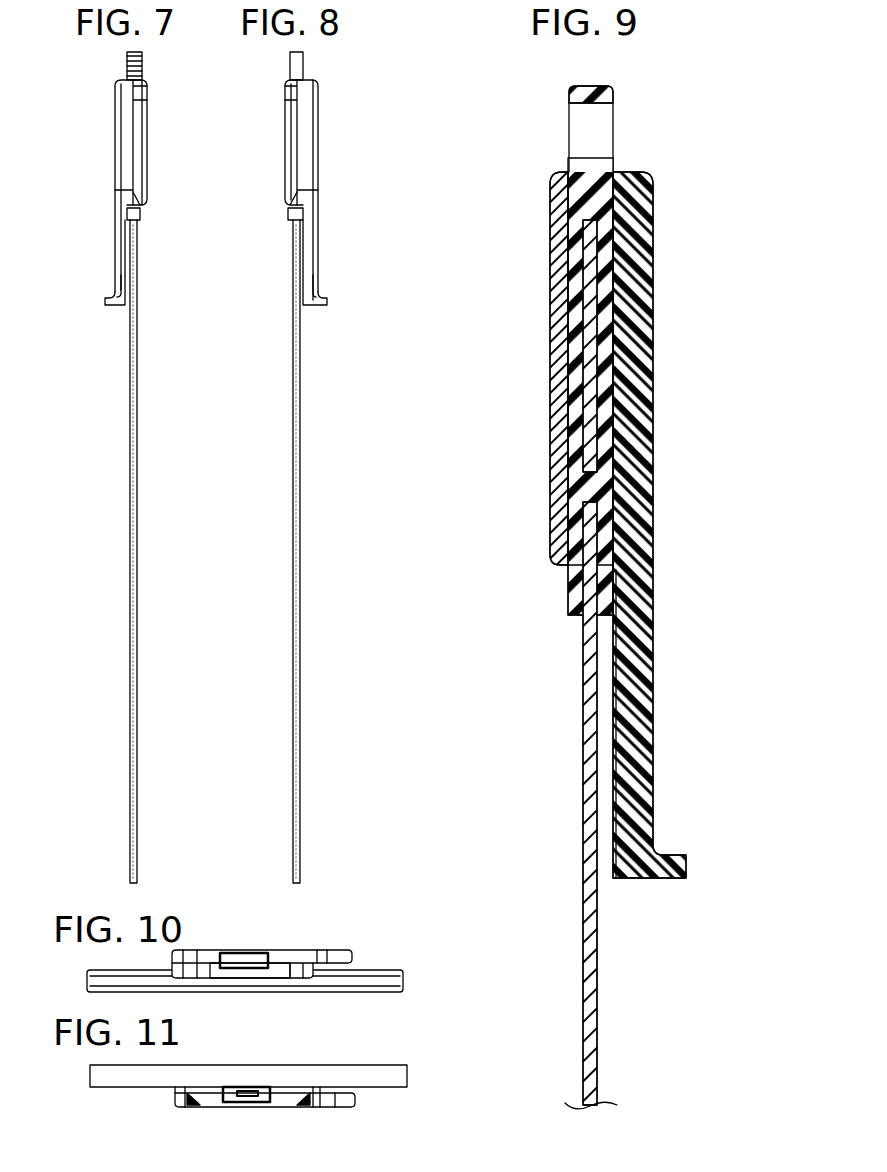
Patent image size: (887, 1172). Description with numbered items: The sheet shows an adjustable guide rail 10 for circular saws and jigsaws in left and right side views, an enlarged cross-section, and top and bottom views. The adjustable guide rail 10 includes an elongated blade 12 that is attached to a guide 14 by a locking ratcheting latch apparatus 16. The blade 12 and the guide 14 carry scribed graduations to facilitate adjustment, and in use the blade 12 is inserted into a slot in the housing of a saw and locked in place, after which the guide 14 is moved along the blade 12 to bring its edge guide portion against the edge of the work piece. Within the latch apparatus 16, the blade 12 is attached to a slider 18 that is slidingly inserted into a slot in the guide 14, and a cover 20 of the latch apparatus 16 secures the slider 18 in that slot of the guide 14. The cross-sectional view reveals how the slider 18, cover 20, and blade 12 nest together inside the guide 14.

In FIG. 7, the adjustable guide rail 10 is at (116, 481).
In FIG. 8, the adjustable guide rail 10 is at (315, 481).
In FIG. 9, the adjustable guide rail 10 is at (697, 302).
In FIG. 10, the adjustable guide rail 10 is at (397, 940).
In FIG. 7, the elongated blade 12 is at (137, 440).
In FIG. 8, the elongated blade 12 is at (295, 440).
In FIG. 9, the elongated blade 12 is at (588, 800).
In FIG. 10, the elongated blade 12 is at (248, 956).
In FIG. 11, the elongated blade 12 is at (250, 1090).
In FIG. 7, the guide 14 is at (120, 243).
In FIG. 8, the guide 14 is at (313, 243).
In FIG. 9, the guide 14 is at (640, 525).
In FIG. 10, the guide 14 is at (385, 982).
In FIG. 11, the guide 14 is at (390, 1072).
In FIG. 7, the locking ratcheting latch apparatus 16 is at (104, 107).
In FIG. 8, the locking ratcheting latch apparatus 16 is at (328, 107).
In FIG. 9, the locking ratcheting latch apparatus 16 is at (540, 300).
In FIG. 7, the slider 18 is at (143, 60).
In FIG. 8, the slider 18 is at (290, 60).
In FIG. 9, the slider 18 is at (578, 585).
In FIG. 10, the slider 18 is at (213, 972).
In FIG. 11, the slider 18 is at (235, 1097).
In FIG. 7, the cover 20 is at (125, 158).
In FIG. 8, the cover 20 is at (305, 158).
In FIG. 9, the cover 20 is at (560, 440).
In FIG. 10, the cover 20 is at (202, 955).
In FIG. 11, the cover 20 is at (291, 1097).